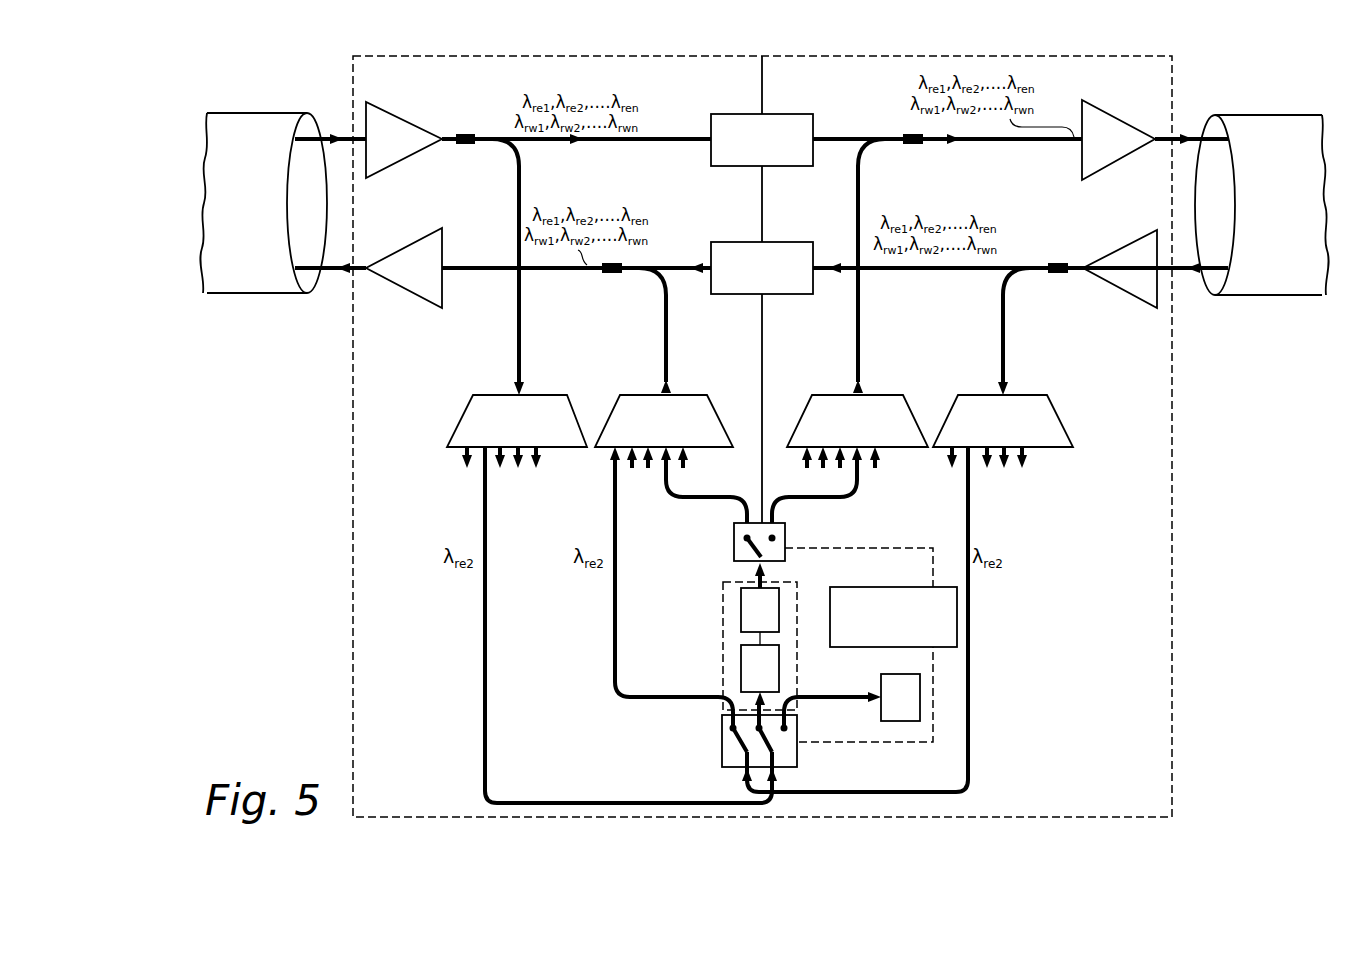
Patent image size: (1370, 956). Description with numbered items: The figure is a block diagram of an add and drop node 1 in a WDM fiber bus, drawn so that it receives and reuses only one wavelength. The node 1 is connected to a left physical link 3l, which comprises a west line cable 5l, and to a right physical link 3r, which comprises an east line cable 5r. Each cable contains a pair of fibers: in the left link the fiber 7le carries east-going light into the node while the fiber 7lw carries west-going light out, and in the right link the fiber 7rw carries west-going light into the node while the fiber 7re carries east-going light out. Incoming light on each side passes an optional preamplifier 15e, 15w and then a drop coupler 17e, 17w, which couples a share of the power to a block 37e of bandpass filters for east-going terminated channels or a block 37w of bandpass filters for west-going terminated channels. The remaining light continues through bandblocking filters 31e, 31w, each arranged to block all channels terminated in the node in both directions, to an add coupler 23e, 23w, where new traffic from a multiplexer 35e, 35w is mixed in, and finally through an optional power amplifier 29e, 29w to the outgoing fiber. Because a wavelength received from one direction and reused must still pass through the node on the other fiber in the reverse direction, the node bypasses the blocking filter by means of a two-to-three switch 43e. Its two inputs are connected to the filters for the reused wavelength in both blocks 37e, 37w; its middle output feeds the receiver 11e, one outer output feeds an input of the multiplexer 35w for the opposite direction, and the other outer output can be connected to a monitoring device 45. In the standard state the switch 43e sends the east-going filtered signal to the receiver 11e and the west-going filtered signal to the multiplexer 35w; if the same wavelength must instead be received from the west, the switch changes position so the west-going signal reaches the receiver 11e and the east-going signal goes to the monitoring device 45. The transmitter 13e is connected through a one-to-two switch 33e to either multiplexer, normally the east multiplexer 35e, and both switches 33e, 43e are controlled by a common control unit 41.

The add and drop node 1 is at (353, 407).
The left physical link 3l is at (266, 66).
The right physical link 3r is at (1264, 76).
The west line cable 5l is at (258, 294).
The east line cable 5r is at (1288, 297).
The left east-going fiber 7le is at (327, 130).
The left west-going fiber 7lw is at (326, 275).
The right east-going fiber 7re is at (1194, 130).
The right west-going fiber 7rw is at (1180, 275).
The east preamplifier 15e is at (408, 122).
The west preamplifier 15w is at (1110, 283).
The east drop coupler 17e is at (470, 136).
The west drop coupler 17w is at (1056, 275).
The east add coupler 23e is at (912, 147).
The west add coupler 23w is at (610, 274).
The east power amplifier 29e is at (1117, 123).
The west power amplifier 29w is at (413, 293).
The east bandblocking filters 31e is at (807, 114).
The west bandblocking filters 31w is at (770, 242).
The 1:2 switch 33e is at (785, 530).
The east multiplexer 35e is at (883, 397).
The west multiplexer 35w is at (713, 412).
The east bandpass filter block 37e is at (587, 393).
The west bandpass filter block 37w is at (1052, 423).
The transmitter 13e is at (741, 607).
The receiver 11e is at (779, 668).
The control unit 41 is at (892, 587).
The 2:3 switch 43e is at (722, 731).
The monitoring device 45 is at (881, 712).